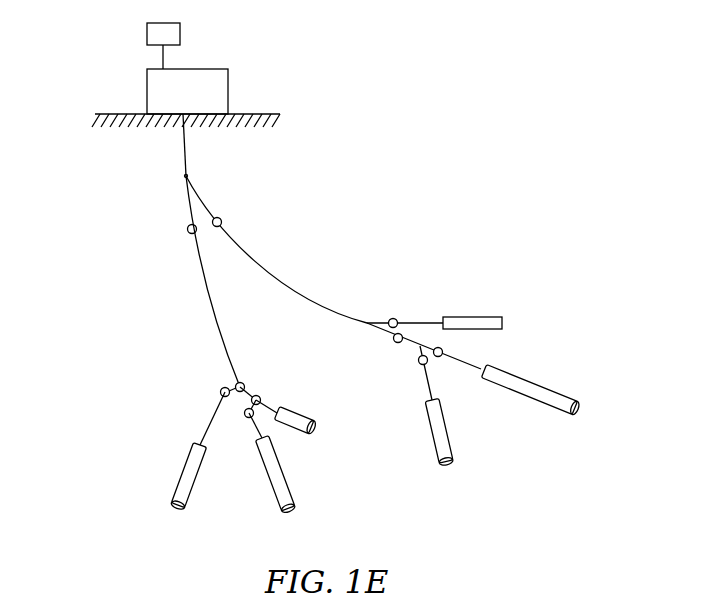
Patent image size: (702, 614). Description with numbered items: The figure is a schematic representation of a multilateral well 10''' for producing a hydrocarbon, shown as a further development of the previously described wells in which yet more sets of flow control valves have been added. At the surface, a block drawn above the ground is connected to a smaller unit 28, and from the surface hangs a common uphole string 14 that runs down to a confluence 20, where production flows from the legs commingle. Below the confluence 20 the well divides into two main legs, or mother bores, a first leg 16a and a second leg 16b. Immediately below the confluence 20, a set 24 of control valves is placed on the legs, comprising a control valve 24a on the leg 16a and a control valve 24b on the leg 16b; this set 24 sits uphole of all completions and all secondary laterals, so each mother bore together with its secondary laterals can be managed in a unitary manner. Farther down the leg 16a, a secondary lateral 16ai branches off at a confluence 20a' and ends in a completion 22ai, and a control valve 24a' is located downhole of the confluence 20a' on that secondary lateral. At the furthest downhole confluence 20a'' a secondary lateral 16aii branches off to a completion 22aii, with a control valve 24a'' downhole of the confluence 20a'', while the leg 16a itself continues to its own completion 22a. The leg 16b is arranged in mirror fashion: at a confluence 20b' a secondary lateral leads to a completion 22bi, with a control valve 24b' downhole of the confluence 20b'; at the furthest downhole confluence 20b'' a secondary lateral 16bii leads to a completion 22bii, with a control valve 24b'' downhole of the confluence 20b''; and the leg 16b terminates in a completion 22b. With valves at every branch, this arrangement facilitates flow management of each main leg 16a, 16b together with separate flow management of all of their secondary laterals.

The well 10''' is at (160, 86).
The controller / power source 28 is at (182, 32).
The uphole string 14 is at (183, 141).
The confluence 20 is at (190, 174).
The leg 16a is at (262, 266).
The leg 16b is at (204, 287).
The control valve 24a is at (254, 212).
The control valve 24b is at (155, 241).
The set of control valves 24 is at (207, 233).
The confluence 20a' is at (351, 292).
The control valve 24a' is at (411, 279).
The secondary lateral 16ai is at (415, 321).
The completion 22ai is at (473, 316).
The confluence 20a'' is at (385, 356).
The control valve 24a'' is at (462, 386).
The completion 22a is at (558, 390).
The secondary lateral 16aii is at (426, 392).
The completion 22aii is at (449, 436).
The confluence 20b' is at (208, 371).
The control valve 24b' is at (181, 377).
The confluence 20b'' is at (262, 376).
The control valve 24b'' is at (298, 437).
The secondary lateral 16bii is at (207, 436).
The completion 22bii is at (166, 491).
The completion 22bi is at (296, 415).
The completion 22b is at (272, 492).